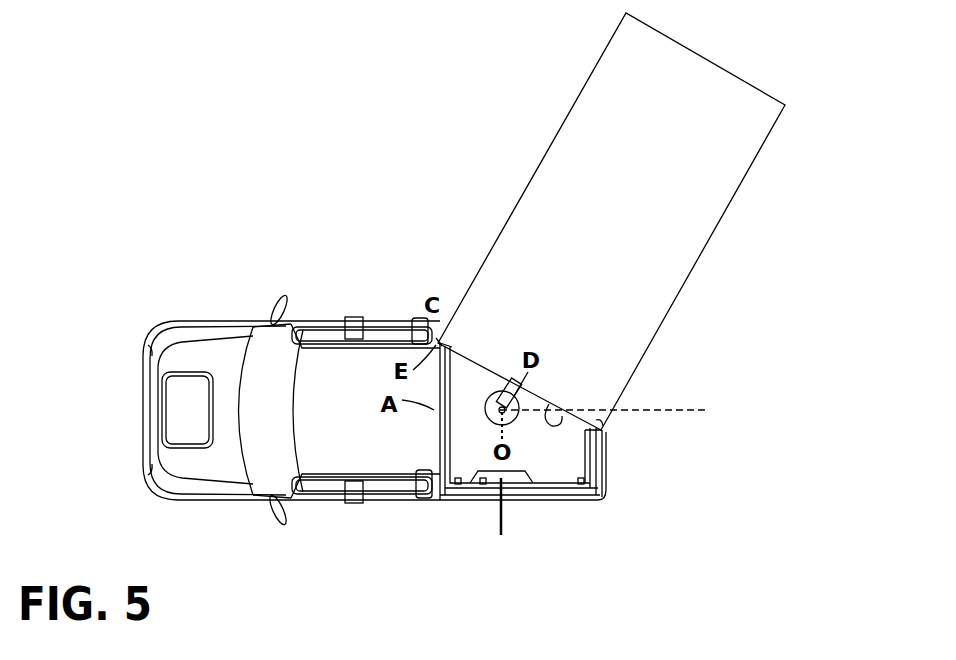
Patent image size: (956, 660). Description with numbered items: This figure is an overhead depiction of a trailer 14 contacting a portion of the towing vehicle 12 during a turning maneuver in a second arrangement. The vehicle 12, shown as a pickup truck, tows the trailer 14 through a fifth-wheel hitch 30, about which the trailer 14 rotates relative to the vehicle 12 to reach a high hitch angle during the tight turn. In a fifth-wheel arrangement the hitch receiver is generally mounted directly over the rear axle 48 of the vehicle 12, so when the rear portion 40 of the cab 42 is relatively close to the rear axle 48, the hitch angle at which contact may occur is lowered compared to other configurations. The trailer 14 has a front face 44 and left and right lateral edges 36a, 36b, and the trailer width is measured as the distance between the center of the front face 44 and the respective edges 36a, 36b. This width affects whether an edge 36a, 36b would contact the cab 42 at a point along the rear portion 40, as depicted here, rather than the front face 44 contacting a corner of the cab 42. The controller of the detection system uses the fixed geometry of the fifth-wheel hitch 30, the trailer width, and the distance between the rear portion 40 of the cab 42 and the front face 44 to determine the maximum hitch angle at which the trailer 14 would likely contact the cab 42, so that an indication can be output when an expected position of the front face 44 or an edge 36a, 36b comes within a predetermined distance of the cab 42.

The vehicle 12 is at (228, 308).
The trailer 14 is at (532, 163).
The fifth-wheel hitch 30 is at (514, 417).
The left lateral edge 36a is at (440, 343).
The right lateral edge 36b is at (603, 424).
The rear portion 40 is at (437, 458).
The cab 42 is at (408, 443).
The front face 44 is at (555, 416).
The rear axle 48 is at (503, 520).